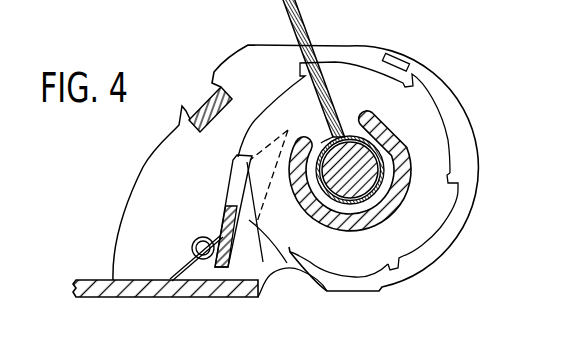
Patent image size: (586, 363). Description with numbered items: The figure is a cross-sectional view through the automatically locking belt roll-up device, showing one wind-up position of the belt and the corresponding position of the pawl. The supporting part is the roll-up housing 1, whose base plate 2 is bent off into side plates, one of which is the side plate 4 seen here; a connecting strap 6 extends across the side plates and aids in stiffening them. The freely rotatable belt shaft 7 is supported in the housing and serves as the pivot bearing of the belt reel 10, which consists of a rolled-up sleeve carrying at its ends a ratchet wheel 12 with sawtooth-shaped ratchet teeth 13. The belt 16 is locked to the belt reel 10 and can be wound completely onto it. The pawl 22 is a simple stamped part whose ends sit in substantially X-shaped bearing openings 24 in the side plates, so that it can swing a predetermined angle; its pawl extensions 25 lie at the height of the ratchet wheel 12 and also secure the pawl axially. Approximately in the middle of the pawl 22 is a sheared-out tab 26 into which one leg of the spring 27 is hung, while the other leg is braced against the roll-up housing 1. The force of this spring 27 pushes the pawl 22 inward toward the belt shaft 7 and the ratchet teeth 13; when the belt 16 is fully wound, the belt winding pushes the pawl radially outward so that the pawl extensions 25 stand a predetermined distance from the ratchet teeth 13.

The roll-up housing 1 is at (160, 300).
The base plate 2 is at (113, 297).
The side plate 4 is at (255, 63).
The connecting strap 6 is at (203, 107).
The belt shaft 7 is at (370, 174).
The belt reel 10 is at (408, 152).
The ratchet wheel 12 is at (422, 107).
The ratchet teeth 13 is at (467, 188).
The belt 16 is at (301, 47).
The pawl 22 is at (222, 260).
The bearing opening 24 is at (266, 293).
The pawl extension 25 is at (238, 181).
The sheared-out tab 26 is at (203, 256).
The spring 27 is at (194, 244).